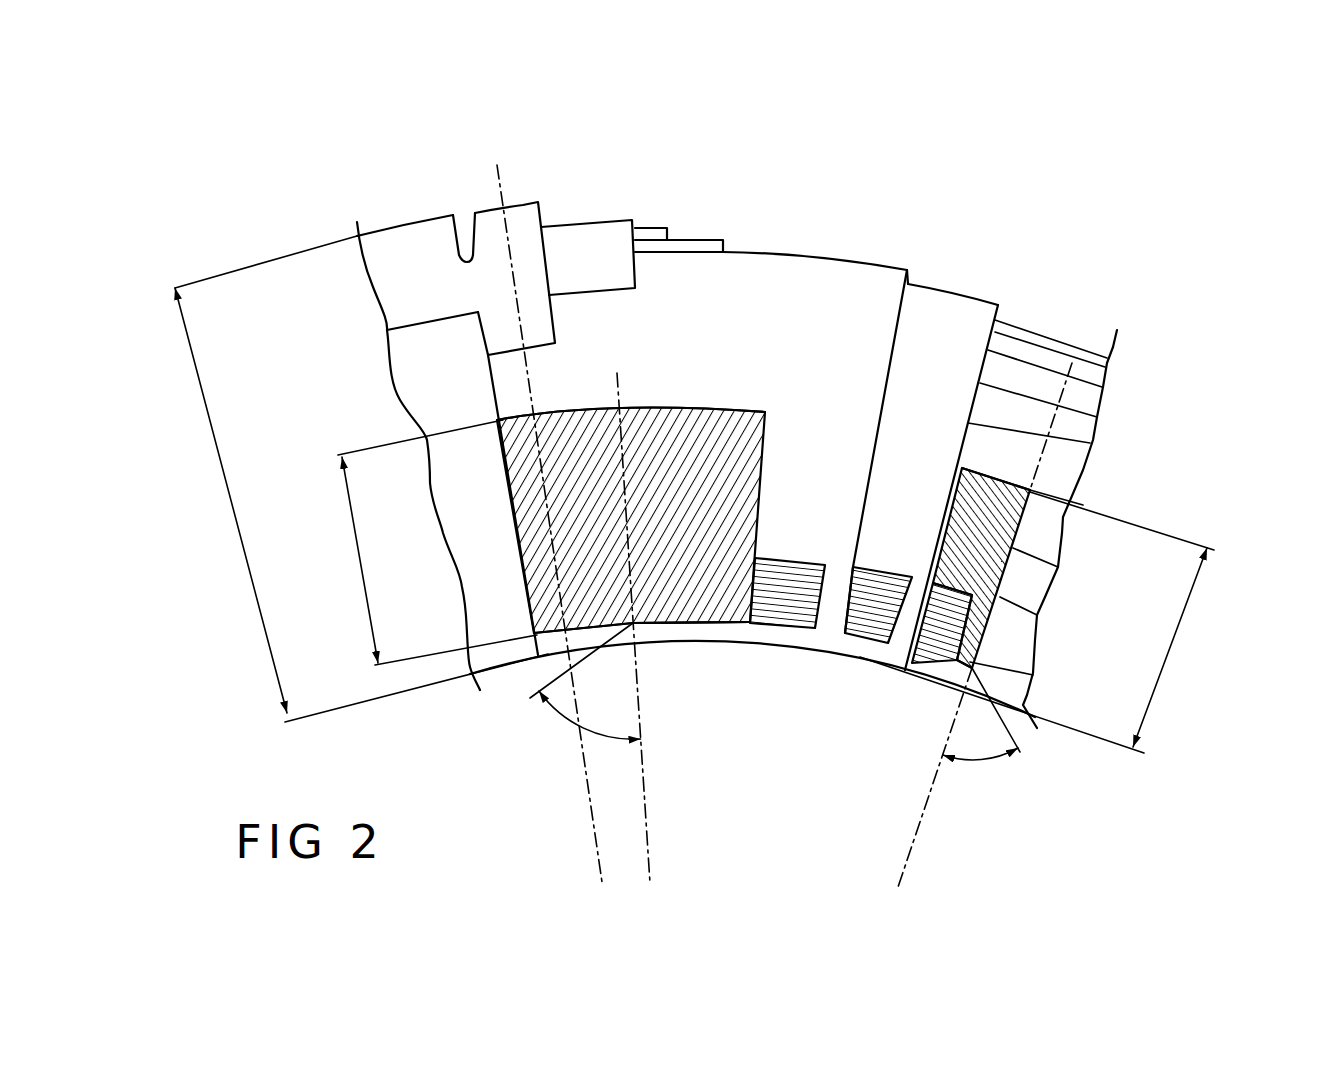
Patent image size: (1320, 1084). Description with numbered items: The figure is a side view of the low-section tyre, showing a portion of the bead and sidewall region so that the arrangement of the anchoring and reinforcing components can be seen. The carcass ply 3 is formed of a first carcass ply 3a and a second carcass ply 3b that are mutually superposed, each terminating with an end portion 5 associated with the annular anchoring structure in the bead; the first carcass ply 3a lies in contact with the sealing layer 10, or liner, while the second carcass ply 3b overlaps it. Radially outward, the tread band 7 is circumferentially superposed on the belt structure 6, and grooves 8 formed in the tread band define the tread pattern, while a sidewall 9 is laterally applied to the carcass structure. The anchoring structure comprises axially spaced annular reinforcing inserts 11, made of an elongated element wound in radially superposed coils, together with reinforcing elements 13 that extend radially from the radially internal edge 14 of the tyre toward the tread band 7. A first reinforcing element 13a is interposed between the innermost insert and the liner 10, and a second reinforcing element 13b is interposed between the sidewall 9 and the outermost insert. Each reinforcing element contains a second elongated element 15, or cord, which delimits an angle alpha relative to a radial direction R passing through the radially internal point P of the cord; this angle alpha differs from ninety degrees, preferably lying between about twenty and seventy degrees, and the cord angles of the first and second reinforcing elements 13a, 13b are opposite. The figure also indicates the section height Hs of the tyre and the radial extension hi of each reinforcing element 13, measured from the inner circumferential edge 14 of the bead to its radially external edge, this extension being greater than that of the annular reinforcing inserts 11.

The carcass ply 3 is at (858, 257).
The first carcass ply 3a is at (975, 313).
The second carcass ply 3b is at (880, 282).
The end portion 5 is at (875, 650).
The belt structure 6 is at (613, 233).
The tread band 7 is at (523, 213).
The grooves 8 is at (465, 227).
The sidewall 9 is at (437, 345).
The sealing layer 10 is at (1090, 353).
The annular reinforcing insert 11 is at (790, 633).
The reinforcing element 13 is at (730, 390).
The first reinforcing element 13a is at (990, 465).
The second reinforcing element 13b is at (687, 405).
The radially internal edge 14 is at (718, 630).
The second elongated element 15 is at (680, 610).
The section height Hs is at (232, 488).
The radial extension hi is at (363, 570).
The radial direction R is at (590, 813).
The radially internal point P is at (636, 626).
The angle alpha is at (572, 724).